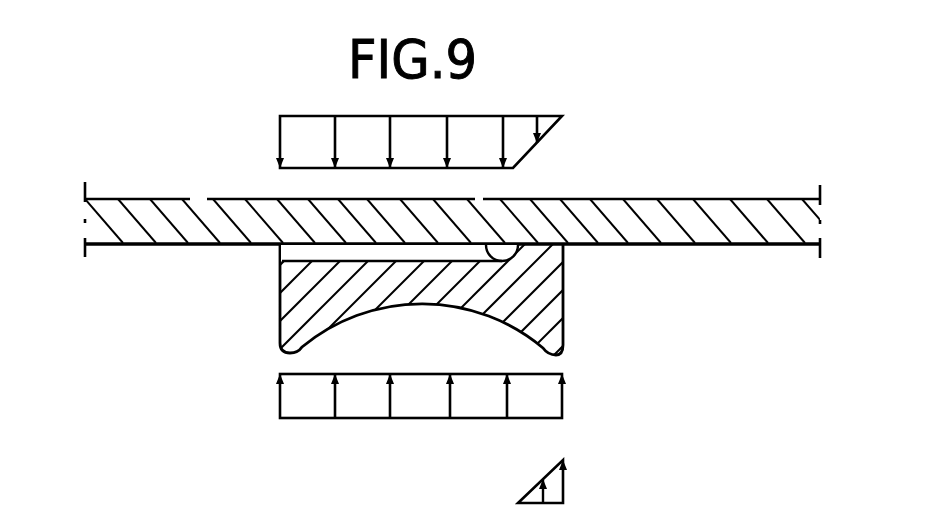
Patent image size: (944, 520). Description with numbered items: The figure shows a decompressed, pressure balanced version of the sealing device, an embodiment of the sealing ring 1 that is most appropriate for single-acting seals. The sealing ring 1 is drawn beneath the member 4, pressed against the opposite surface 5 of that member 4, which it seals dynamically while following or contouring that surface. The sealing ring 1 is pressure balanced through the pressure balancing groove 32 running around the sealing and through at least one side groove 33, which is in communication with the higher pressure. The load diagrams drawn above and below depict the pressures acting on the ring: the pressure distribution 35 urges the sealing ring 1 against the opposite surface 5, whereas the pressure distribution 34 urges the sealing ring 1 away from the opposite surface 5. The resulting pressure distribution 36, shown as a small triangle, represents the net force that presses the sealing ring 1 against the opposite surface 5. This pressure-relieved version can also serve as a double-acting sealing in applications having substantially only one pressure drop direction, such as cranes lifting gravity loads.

The sealing ring 1 is at (302, 288).
The member 4 is at (703, 225).
The opposite surface 5 is at (658, 245).
The pressure balancing groove 32 is at (508, 256).
The side groove 33 is at (282, 253).
The pressure distribution 34 is at (303, 141).
The pressure distribution 35 is at (548, 400).
The resulting pressure distribution 36 is at (556, 483).